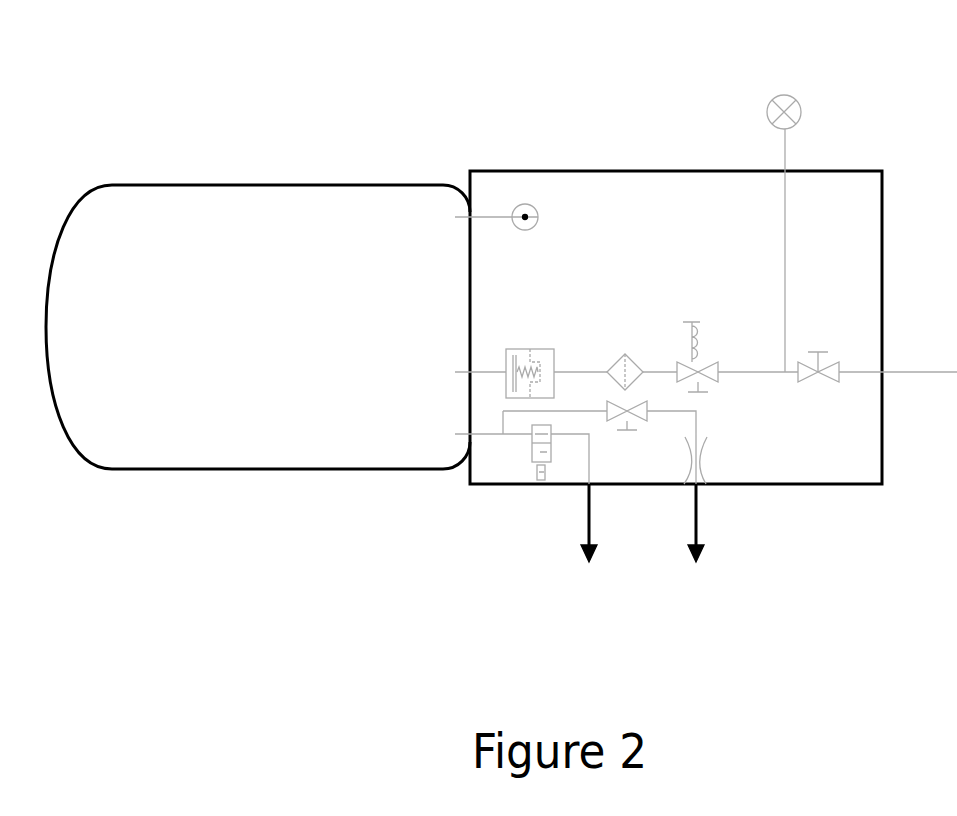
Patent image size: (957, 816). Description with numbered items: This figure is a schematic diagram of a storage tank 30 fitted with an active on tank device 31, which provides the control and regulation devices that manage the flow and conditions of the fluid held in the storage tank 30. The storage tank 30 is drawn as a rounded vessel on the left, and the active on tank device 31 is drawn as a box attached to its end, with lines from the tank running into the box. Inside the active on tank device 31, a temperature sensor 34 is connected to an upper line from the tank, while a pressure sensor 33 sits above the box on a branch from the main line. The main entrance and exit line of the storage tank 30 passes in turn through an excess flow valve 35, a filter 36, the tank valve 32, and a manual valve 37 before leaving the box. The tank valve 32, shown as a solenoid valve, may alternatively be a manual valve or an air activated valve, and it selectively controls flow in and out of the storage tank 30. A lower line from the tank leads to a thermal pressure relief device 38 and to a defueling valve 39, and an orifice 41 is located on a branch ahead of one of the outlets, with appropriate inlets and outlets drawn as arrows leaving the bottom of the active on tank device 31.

The storage tank 30 is at (258, 327).
The active on tank device 31 is at (504, 171).
The tank valve 32 is at (697, 323).
The pressure sensor 33 is at (801, 111).
The temperature sensor 34 is at (538, 217).
The excess flow valve 35 is at (538, 350).
The filter 36 is at (622, 358).
The manual valve 37 is at (828, 352).
The thermal pressure relief device 38 is at (532, 450).
The defueling valve 39 is at (637, 430).
The orifice 41 is at (703, 457).